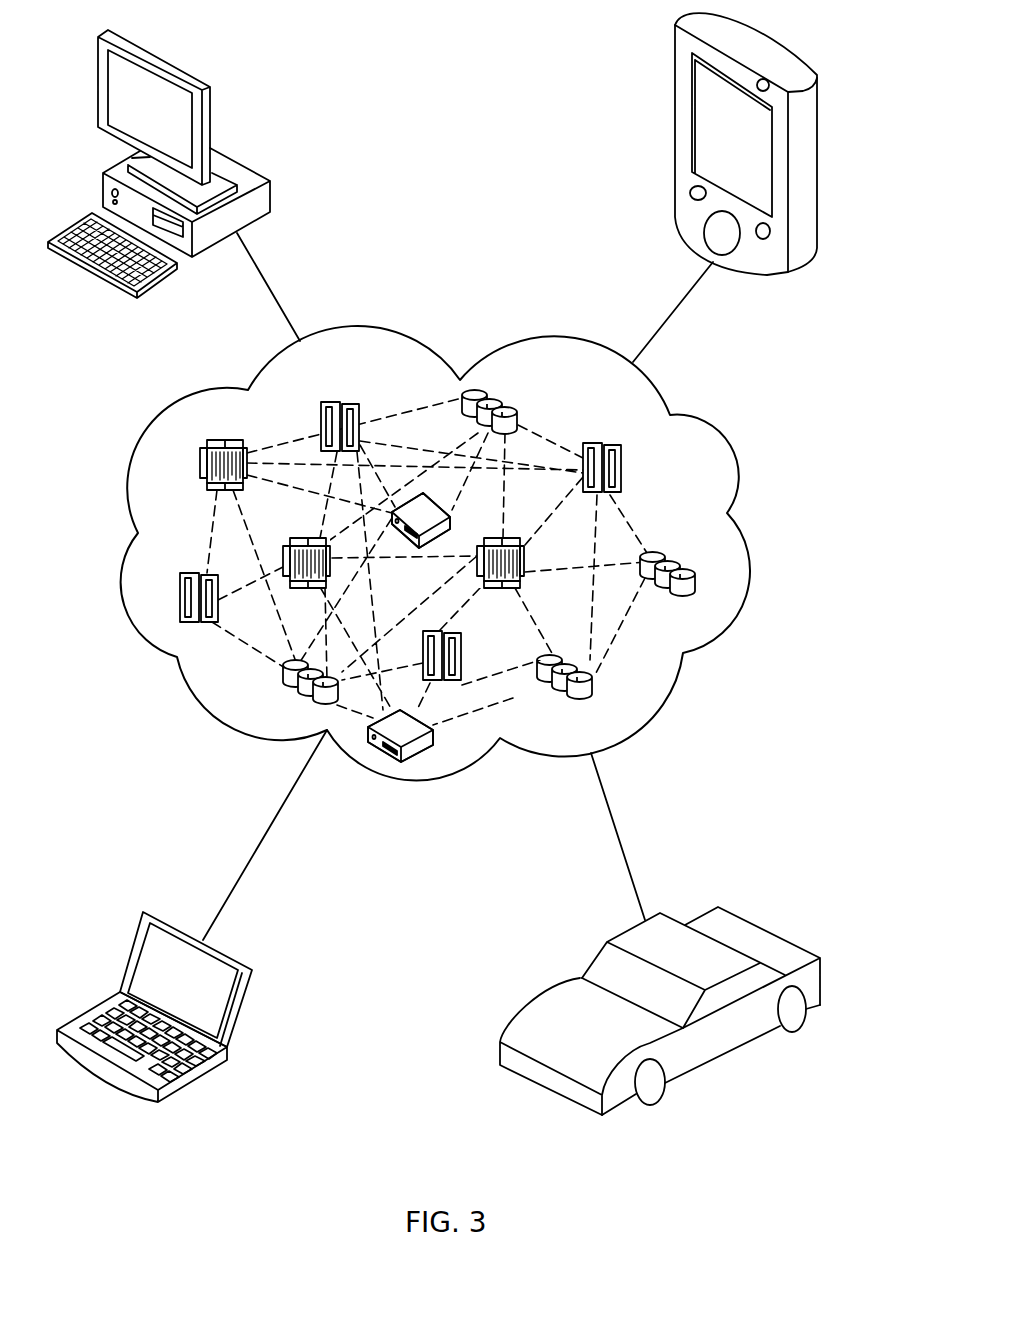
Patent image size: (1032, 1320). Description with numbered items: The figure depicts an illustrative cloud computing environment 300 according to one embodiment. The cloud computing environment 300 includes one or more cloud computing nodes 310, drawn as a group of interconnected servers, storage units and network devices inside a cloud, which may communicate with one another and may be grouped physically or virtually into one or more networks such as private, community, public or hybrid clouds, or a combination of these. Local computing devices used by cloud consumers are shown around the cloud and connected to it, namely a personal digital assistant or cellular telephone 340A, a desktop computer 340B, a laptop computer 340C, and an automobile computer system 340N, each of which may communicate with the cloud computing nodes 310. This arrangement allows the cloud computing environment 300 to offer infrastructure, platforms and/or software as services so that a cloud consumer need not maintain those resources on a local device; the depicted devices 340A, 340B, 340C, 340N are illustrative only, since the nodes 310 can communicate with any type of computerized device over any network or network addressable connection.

The cloud computing environment 300 is at (727, 633).
The cloud computing nodes 310 is at (668, 491).
The personal digital assistant (PDA) or cellular telephone 340A is at (672, 87).
The desktop computer 340B is at (273, 190).
The laptop computer 340C is at (257, 980).
The automobile computer system 340N is at (820, 977).